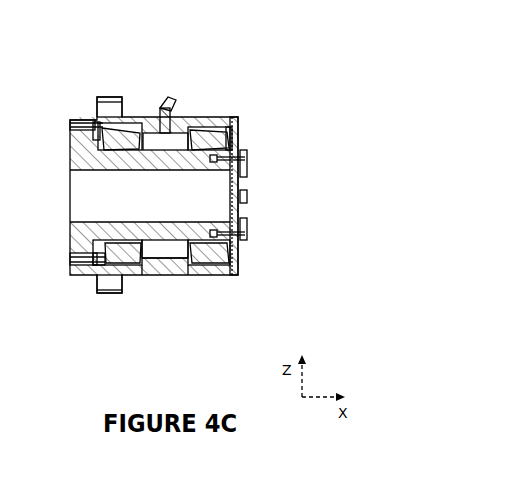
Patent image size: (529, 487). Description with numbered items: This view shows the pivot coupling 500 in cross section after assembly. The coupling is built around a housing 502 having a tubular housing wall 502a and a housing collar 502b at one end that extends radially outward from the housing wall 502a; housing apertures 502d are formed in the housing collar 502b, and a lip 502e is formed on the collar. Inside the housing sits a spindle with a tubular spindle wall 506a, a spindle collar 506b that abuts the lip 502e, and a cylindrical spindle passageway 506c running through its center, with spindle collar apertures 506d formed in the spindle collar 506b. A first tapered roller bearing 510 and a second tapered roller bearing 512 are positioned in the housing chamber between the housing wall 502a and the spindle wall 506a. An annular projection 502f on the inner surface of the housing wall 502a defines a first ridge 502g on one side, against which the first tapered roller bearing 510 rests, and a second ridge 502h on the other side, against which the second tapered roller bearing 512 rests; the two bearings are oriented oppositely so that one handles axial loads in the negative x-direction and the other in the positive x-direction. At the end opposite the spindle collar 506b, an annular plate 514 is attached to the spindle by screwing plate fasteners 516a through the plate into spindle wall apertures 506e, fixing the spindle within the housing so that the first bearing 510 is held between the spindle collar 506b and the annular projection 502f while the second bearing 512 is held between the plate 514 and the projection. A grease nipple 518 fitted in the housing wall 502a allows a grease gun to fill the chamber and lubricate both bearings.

The pivot coupling 500 is at (316, 73).
The housing 502 is at (232, 275).
The housing wall 502a is at (238, 117).
The housing collar 502b is at (107, 295).
The housing apertures 502d is at (105, 96).
The lip 502e is at (93, 120).
The annular projection 502f is at (168, 262).
The first ridge 502g is at (147, 265).
The second ridge 502h is at (192, 272).
The spindle wall 506a is at (237, 243).
The spindle collar 506b is at (70, 276).
The spindle passageway 506c is at (248, 195).
The spindle collar apertures 506d is at (68, 122).
The spindle wall apertures 506e is at (247, 158).
The first tapered roller bearing 510 is at (122, 137).
The second tapered roller bearing 512 is at (203, 127).
The annular plate 514 is at (238, 137).
The plate fasteners 516a is at (248, 167).
The grease nipple 518 is at (173, 97).